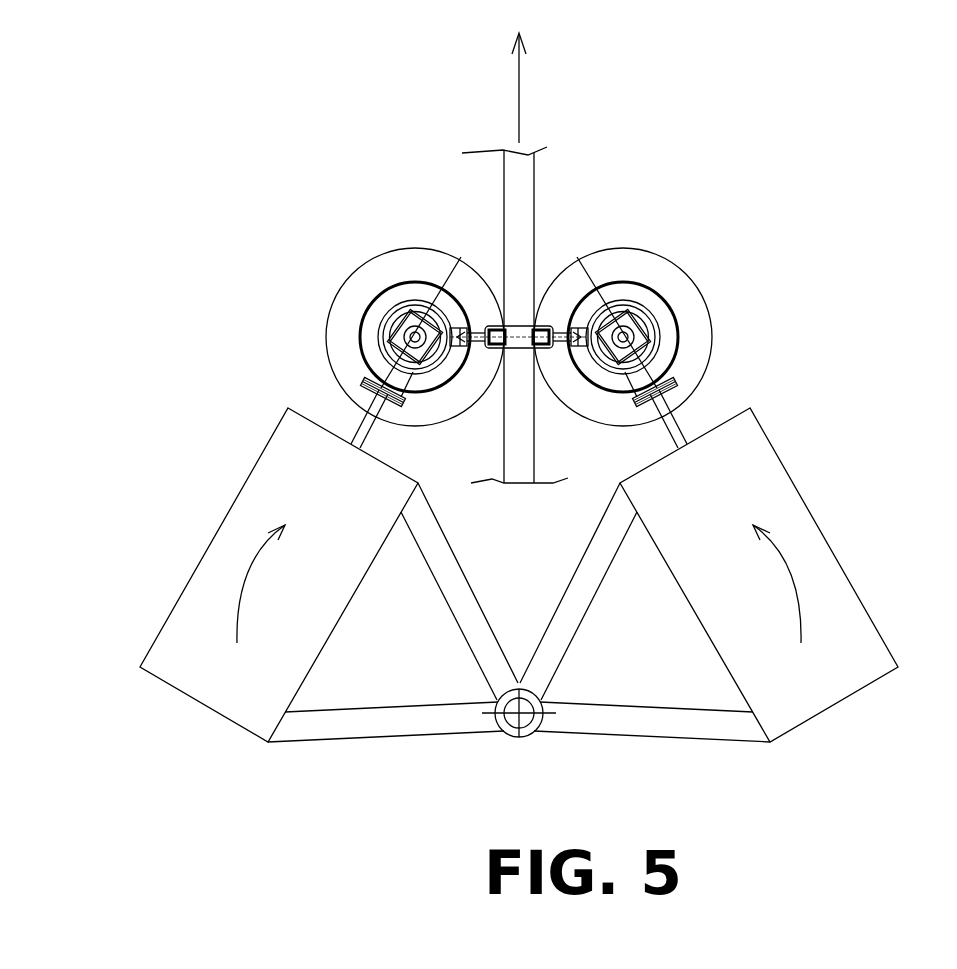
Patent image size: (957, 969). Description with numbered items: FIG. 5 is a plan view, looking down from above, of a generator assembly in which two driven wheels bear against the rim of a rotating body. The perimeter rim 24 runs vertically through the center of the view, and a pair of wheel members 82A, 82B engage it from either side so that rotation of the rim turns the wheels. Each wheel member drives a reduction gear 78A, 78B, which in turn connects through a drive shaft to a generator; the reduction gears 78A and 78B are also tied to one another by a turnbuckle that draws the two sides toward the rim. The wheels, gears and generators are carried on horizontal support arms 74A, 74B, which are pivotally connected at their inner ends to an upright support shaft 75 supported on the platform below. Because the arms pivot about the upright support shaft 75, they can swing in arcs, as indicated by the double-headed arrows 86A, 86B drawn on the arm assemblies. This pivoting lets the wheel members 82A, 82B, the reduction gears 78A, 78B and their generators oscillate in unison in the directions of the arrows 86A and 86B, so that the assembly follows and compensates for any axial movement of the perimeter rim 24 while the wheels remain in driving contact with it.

The perimeter rim 24 is at (525, 193).
The wheel member 82A is at (408, 257).
The wheel member 82B is at (700, 292).
The reduction gear 78A is at (377, 356).
The reduction gear 78B is at (662, 357).
The double-headed arrow 86A is at (279, 575).
The double-headed arrow 86B is at (759, 575).
The horizontal support arm 74A is at (403, 728).
The horizontal support arm 74B is at (680, 731).
The upright support shaft 75 is at (522, 723).